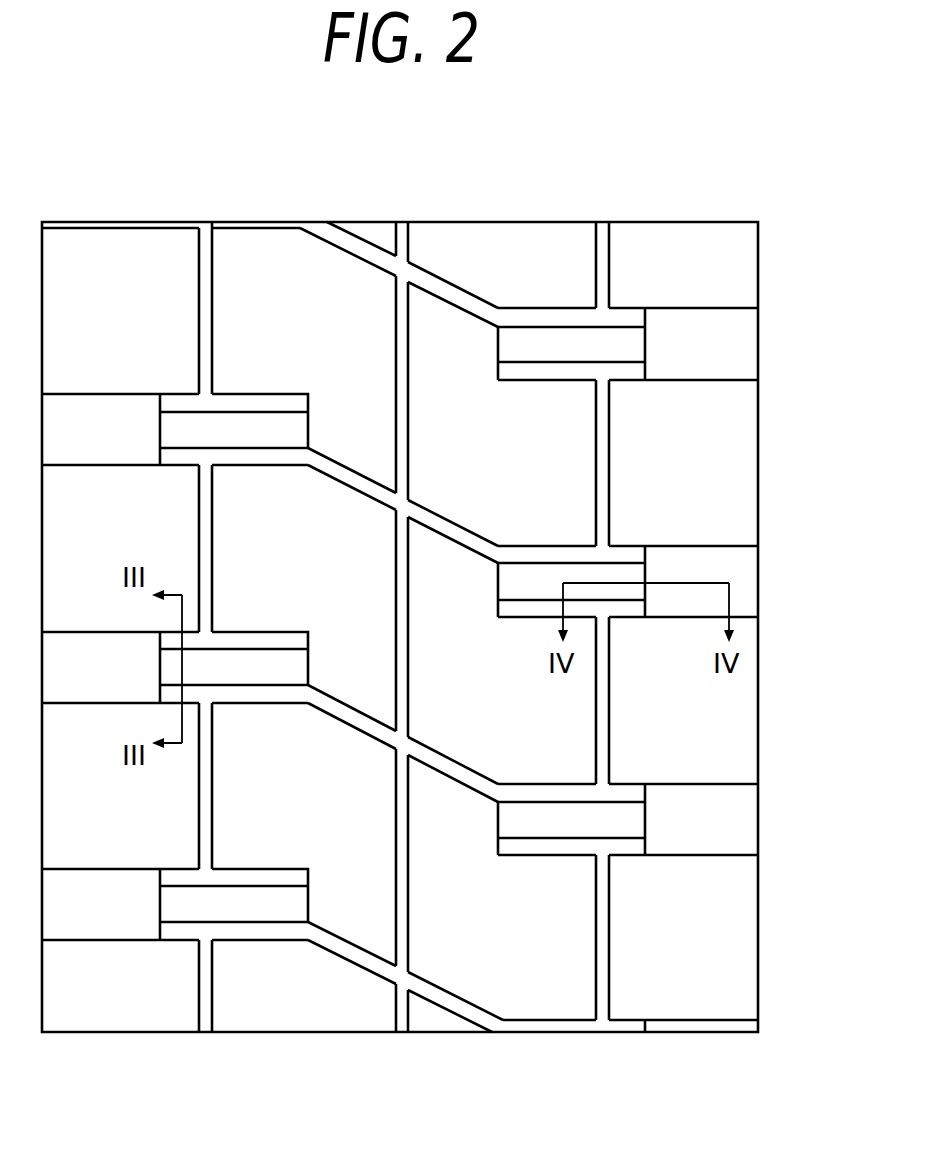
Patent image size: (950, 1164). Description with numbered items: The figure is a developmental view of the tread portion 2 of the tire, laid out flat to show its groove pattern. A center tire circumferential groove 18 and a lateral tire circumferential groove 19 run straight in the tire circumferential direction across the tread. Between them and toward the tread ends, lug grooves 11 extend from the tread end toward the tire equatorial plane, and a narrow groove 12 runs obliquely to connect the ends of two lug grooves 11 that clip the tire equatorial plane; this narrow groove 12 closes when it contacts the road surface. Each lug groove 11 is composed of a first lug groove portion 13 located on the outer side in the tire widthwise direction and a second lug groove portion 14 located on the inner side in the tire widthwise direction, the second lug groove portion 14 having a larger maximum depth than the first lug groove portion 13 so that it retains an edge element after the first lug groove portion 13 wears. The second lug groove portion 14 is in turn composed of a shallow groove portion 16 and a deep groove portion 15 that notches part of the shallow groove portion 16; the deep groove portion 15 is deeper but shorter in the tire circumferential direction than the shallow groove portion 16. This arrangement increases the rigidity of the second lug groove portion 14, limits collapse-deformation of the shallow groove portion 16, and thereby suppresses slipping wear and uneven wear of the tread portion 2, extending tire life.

The tread portion 2 is at (760, 198).
The lug groove 11 is at (628, 581).
The narrow groove 12 is at (437, 512).
The first lug groove portion 13 is at (728, 565).
The second lug groove portion 14 is at (602, 526).
The deep groove portion 15 is at (601, 572).
The shallow groove portion 16 is at (635, 560).
The center tire circumferential groove 18 is at (397, 208).
The lateral tire circumferential groove 19 is at (600, 208).